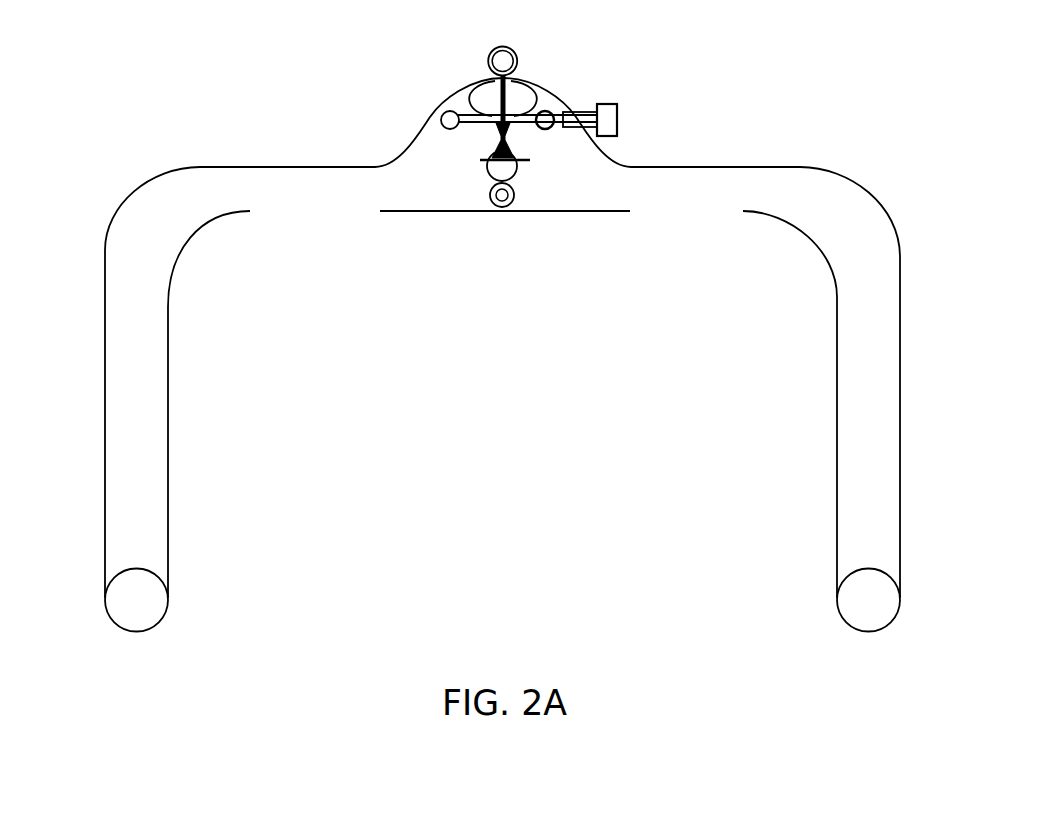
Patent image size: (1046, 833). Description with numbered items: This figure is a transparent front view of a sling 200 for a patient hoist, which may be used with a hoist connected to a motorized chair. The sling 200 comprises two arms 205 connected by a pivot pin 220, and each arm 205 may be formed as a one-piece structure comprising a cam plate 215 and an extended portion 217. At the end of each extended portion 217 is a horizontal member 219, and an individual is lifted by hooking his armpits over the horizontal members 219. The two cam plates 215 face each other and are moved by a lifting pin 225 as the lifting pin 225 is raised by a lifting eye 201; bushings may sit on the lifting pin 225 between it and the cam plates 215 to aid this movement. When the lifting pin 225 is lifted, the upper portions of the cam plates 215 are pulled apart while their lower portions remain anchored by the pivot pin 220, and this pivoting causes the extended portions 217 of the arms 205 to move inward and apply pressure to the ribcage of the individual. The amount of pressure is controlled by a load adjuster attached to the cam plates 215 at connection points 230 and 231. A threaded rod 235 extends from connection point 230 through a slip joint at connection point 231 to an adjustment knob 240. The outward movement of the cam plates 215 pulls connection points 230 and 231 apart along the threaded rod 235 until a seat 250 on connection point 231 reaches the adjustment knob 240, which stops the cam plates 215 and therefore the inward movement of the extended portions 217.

The sling 200 is at (237, 133).
The lifting eye 201 is at (503, 46).
The arms 205 is at (173, 441).
The cam plate 215 is at (442, 155).
The extended portion 217 is at (153, 380).
The horizontal member 219 is at (150, 600).
The pivot pin 220 is at (502, 207).
The lifting pin 225 is at (498, 167).
The connection point 230 is at (448, 118).
The connection point 231 is at (549, 111).
The threaded rod 235 is at (617, 119).
The adjustment knob 240 is at (613, 108).
The seat 250 is at (533, 125).